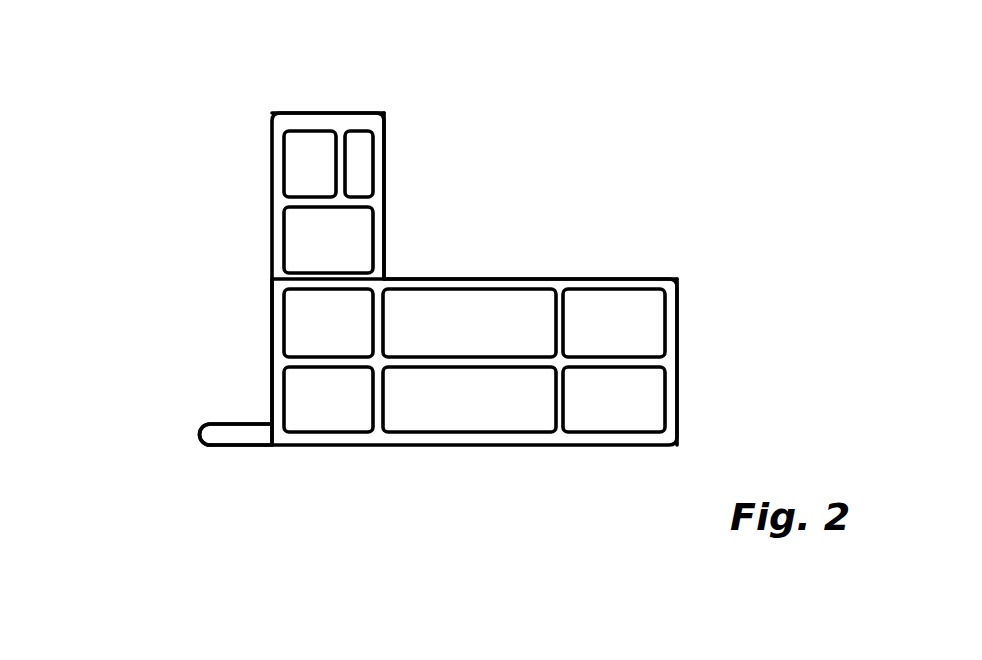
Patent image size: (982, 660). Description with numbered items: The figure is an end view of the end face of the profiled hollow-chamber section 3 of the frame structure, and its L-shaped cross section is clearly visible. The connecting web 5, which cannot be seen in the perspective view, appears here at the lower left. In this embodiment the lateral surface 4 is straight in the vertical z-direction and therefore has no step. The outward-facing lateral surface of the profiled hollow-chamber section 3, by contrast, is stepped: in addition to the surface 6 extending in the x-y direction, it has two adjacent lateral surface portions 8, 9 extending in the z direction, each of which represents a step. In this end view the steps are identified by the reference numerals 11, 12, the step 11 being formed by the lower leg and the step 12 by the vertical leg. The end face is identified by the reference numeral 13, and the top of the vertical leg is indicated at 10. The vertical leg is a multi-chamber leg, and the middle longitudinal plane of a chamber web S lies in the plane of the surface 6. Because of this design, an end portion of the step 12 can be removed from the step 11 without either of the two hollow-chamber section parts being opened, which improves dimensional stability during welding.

The profiled hollow-chamber section 3 is at (380, 238).
The lateral surface 4 is at (263, 294).
The connecting web 5 is at (231, 417).
The surface 6 is at (532, 270).
The lateral surface portion 8 is at (687, 290).
The lateral surface portion 9 is at (393, 163).
The upper wall 10 is at (327, 104).
The step 11 is at (738, 280).
The step 12 is at (435, 115).
The end face 13 is at (354, 335).
The chamber web S is at (296, 264).